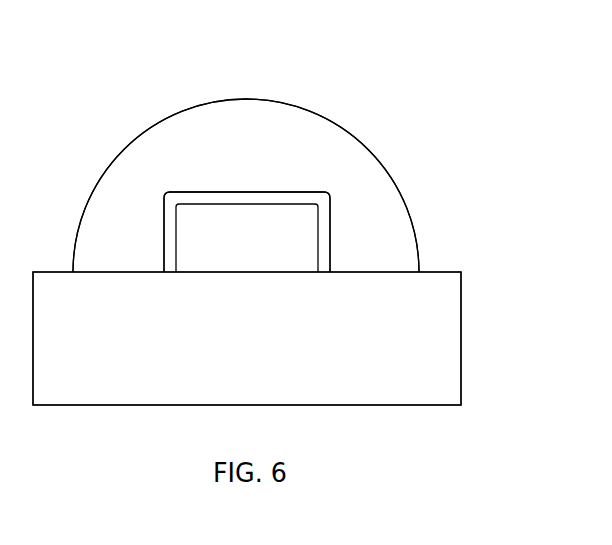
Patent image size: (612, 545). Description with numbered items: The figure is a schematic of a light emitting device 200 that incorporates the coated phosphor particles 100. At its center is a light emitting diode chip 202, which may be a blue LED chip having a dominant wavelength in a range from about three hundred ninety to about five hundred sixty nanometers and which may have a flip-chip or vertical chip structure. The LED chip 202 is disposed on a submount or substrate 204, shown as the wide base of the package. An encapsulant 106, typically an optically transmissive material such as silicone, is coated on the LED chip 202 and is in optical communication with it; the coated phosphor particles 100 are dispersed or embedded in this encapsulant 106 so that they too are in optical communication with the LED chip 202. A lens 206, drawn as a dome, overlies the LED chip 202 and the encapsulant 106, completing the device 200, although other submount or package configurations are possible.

The light emitting device 200 is at (84, 111).
The light emitting diode (LED) chip 202 is at (262, 212).
The submount (substrate) 204 is at (461, 352).
The lens 206 is at (246, 97).
The encapsulant 106 is at (222, 192).
The coated phosphor particles 100 is at (247, 232).